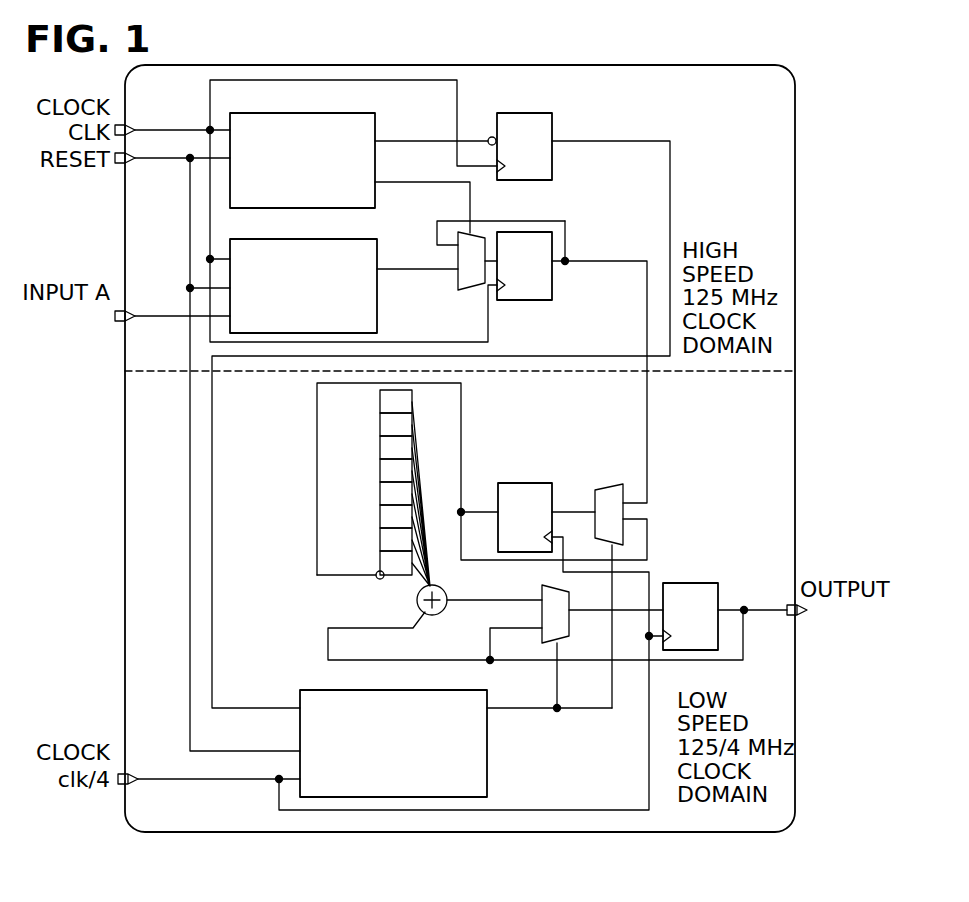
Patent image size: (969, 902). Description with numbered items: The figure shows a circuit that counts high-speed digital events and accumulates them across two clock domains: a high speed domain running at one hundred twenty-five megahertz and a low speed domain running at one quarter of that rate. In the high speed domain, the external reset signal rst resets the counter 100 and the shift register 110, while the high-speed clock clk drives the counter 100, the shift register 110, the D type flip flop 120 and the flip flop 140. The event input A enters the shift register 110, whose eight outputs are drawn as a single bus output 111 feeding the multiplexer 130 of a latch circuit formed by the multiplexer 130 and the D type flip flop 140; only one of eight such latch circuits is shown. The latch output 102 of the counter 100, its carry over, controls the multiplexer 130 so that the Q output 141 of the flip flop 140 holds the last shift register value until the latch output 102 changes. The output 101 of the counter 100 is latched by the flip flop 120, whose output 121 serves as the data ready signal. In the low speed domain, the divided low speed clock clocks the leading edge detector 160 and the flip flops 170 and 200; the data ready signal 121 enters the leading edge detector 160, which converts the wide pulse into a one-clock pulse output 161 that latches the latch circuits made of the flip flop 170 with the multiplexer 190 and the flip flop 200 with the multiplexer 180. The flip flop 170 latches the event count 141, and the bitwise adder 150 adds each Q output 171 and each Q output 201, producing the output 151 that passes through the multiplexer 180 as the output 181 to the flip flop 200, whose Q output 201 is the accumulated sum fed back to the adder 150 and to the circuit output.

The counter 100 is at (325, 113).
The output of the counter 101 is at (385, 137).
The latch output of the counter 102 is at (385, 176).
The shift register 110 is at (378, 312).
The bus output of the shift register 111 is at (388, 262).
The D type flip flop 120 is at (553, 120).
The data ready signal 121 is at (650, 138).
The multiplexer 130 is at (465, 290).
The D type flip flop 140 is at (530, 300).
The Q output of flip flop 140 141 is at (605, 256).
The bitwise adder 150 is at (448, 597).
The output of the adder 151 is at (481, 606).
The leading edge detector 160 is at (488, 758).
The output of the leading edge detector 161 is at (497, 707).
The D flip flop 170 is at (540, 483).
The Q output of flip flop 170 171 is at (472, 503).
The multiplexer 180 is at (563, 638).
The output of multiplexer 180 181 is at (594, 591).
The multiplexer 190 is at (598, 490).
The D flip flop 200 is at (690, 583).
The Q output of flip flop 200 201 is at (746, 616).